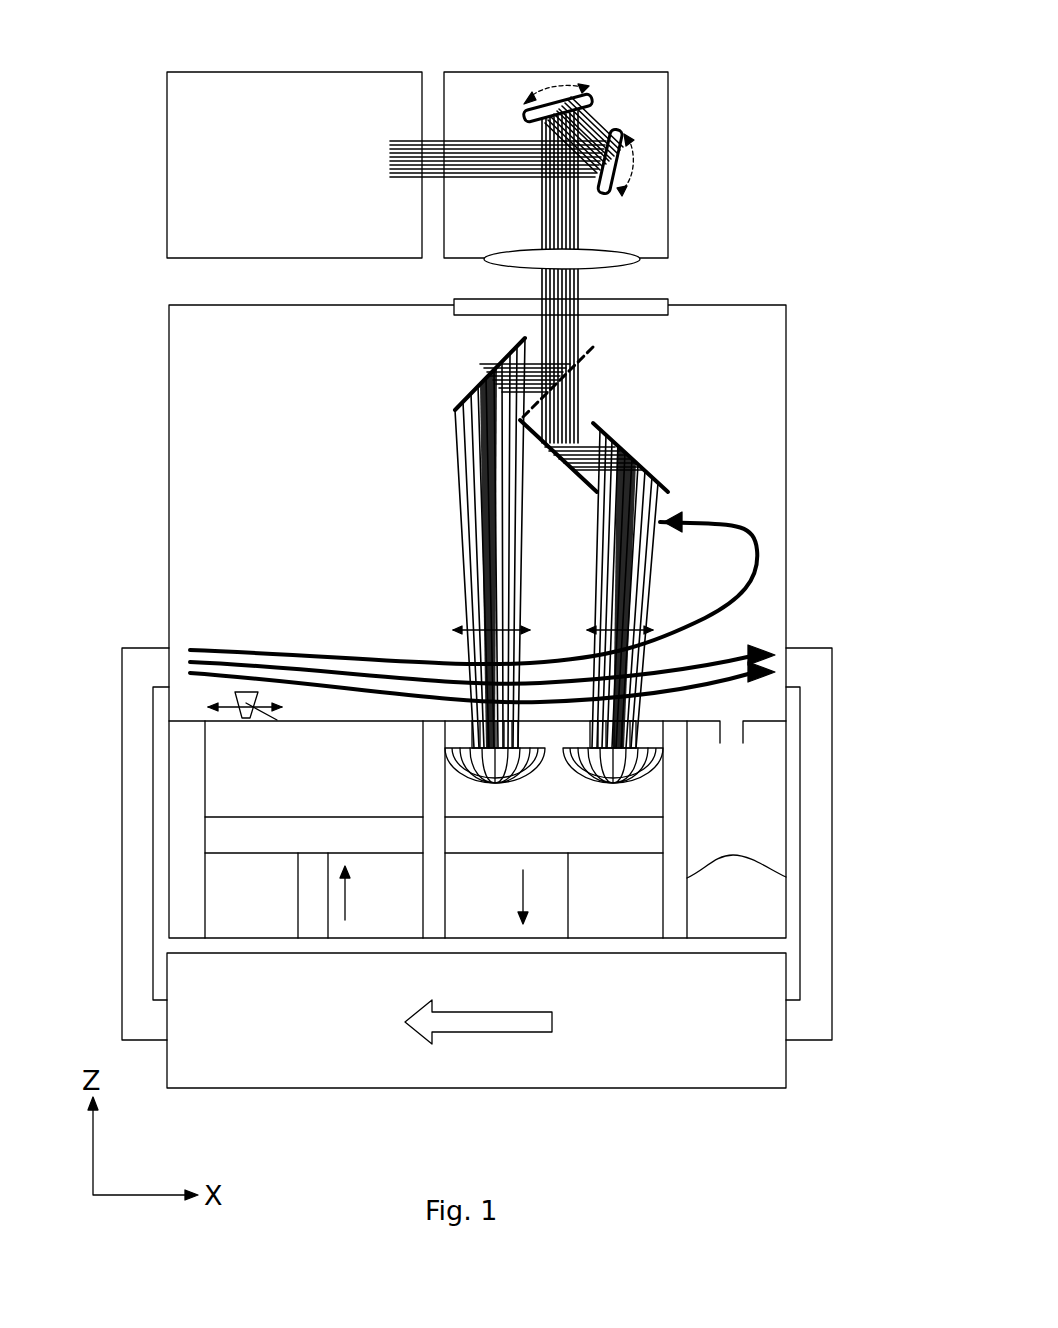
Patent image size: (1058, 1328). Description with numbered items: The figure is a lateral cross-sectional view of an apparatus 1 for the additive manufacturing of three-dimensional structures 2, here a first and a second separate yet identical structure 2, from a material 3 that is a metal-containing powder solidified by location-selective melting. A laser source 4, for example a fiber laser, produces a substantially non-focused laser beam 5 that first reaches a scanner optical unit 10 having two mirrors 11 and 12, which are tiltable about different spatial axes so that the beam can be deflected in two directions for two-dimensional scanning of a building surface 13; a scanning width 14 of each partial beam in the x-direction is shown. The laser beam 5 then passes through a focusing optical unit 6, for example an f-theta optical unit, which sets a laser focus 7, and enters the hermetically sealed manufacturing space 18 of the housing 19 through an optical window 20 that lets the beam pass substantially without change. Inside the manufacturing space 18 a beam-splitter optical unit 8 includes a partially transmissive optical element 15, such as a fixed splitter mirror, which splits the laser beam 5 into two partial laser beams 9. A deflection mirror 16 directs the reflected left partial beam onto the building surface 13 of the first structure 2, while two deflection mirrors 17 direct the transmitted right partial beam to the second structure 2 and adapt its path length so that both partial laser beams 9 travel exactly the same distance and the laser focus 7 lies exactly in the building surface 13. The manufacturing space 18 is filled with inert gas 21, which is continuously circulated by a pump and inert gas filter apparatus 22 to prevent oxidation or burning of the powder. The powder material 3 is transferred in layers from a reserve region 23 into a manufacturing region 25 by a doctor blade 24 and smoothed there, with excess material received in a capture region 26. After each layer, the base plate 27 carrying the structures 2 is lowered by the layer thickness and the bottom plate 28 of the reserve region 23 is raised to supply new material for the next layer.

The apparatus 1 is at (146, 354).
The three-dimensional structure 2 is at (447, 760).
The material 3 is at (225, 790).
The laser source 4 is at (270, 184).
The laser beam 5 is at (400, 158).
The focusing optical unit 6 is at (605, 260).
The laser focus 7 is at (490, 717).
The beam-splitter optical unit 8 is at (678, 414).
The partial laser beam 9 is at (498, 372).
The scanner optical unit 10 is at (668, 188).
The mirror 11 is at (623, 132).
The mirror 12 is at (593, 100).
The building surface 13 is at (580, 717).
The scanning width 14 is at (473, 630).
The partially transmissive optical element 15 is at (598, 350).
The deflection mirror 16 is at (462, 398).
The deflection mirror 17 is at (657, 467).
The manufacturing space 18 is at (257, 372).
The housing 19 is at (163, 477).
The optical window 20 is at (455, 307).
The inert gas 21 is at (305, 652).
The pump and inert gas filter apparatus 22 is at (243, 1034).
The reserve region 23 is at (206, 750).
The doctor blade 24 is at (245, 692).
The manufacturing region 25 is at (432, 708).
The capture region 26 is at (760, 844).
The base plate 27 is at (613, 837).
The bottom plate 28 is at (252, 837).